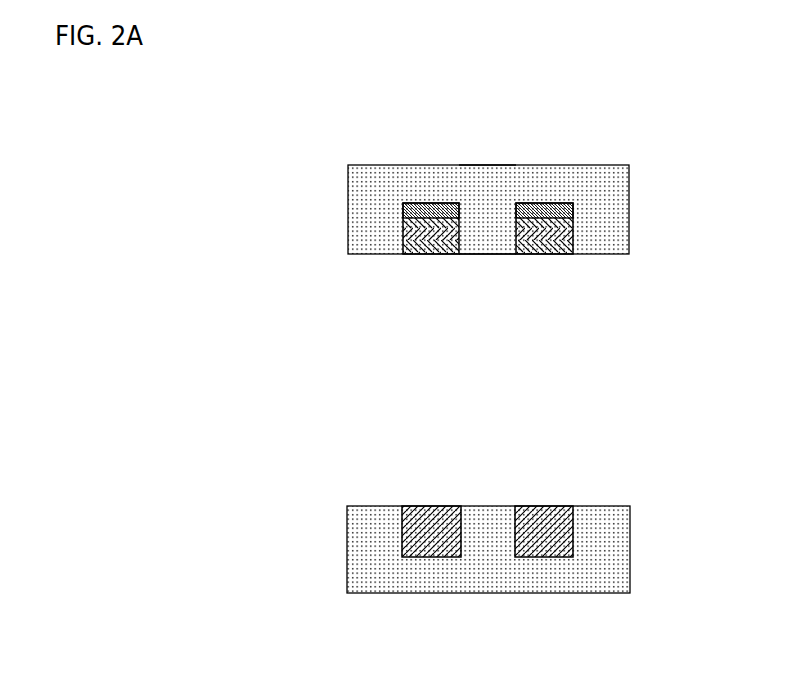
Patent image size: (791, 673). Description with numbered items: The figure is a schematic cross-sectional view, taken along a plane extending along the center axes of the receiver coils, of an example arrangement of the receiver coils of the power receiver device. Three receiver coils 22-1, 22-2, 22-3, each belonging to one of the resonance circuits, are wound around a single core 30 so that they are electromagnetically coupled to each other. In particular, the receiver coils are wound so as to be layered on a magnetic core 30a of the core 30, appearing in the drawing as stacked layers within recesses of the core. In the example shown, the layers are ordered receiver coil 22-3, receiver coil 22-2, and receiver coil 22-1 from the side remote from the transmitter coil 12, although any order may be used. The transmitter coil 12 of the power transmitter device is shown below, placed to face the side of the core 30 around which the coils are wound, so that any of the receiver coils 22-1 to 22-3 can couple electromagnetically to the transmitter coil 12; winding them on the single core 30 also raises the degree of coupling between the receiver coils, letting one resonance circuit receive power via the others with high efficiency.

The core 30 is at (597, 165).
The magnetic core 30a is at (487, 222).
The receiver coil 22-1 is at (550, 253).
The receiver coil 22-2 is at (413, 248).
The receiver coil 22-3 is at (404, 215).
The transmitter coil 12 is at (550, 527).